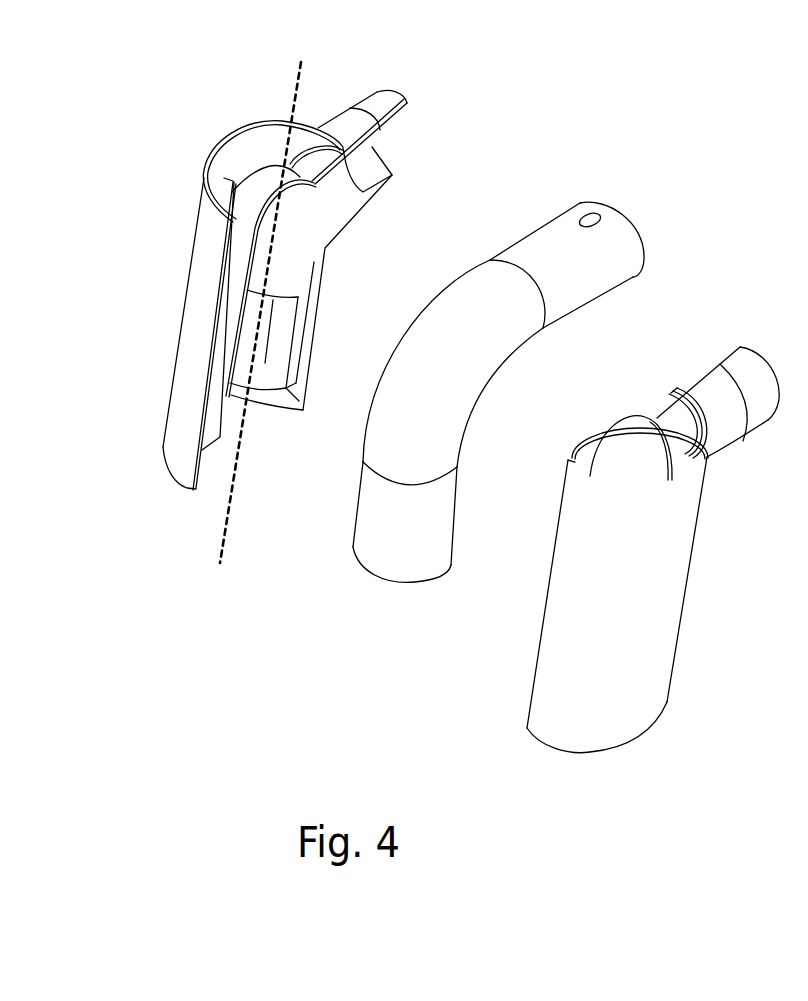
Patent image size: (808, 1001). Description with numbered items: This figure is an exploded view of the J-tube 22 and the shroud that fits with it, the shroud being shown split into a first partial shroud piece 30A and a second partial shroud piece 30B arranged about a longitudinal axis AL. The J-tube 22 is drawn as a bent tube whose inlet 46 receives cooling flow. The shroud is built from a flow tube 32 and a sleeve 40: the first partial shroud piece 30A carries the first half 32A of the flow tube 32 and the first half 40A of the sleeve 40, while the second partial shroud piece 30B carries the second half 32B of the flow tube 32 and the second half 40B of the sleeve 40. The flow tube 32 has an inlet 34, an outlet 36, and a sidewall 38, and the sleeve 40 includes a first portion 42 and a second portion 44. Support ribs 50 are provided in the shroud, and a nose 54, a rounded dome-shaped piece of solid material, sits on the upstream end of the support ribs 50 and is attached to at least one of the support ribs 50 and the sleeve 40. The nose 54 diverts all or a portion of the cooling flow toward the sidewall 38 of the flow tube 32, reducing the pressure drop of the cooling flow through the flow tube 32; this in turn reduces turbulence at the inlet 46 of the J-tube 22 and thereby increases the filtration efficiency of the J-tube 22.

The J-tube 22 is at (513, 244).
The first partial shroud piece 30A is at (271, 389).
The second partial shroud piece 30B is at (593, 753).
The flow tube 32 is at (188, 285).
The first half of flow tube 32A is at (207, 227).
The second half of flow tube 32B is at (660, 556).
The inlet 34 is at (253, 125).
The outlet 36 is at (174, 482).
The sidewall 38 is at (648, 627).
The sleeve 40 is at (737, 371).
The first half of sleeve 40A is at (362, 167).
The second half of sleeve 40B is at (713, 387).
The first portion 42 is at (327, 207).
The second portion 44 is at (358, 103).
The inlet 46 is at (395, 583).
The support ribs 50 is at (232, 177).
The nose 54 is at (262, 186).
The longitudinal axis AL is at (295, 112).